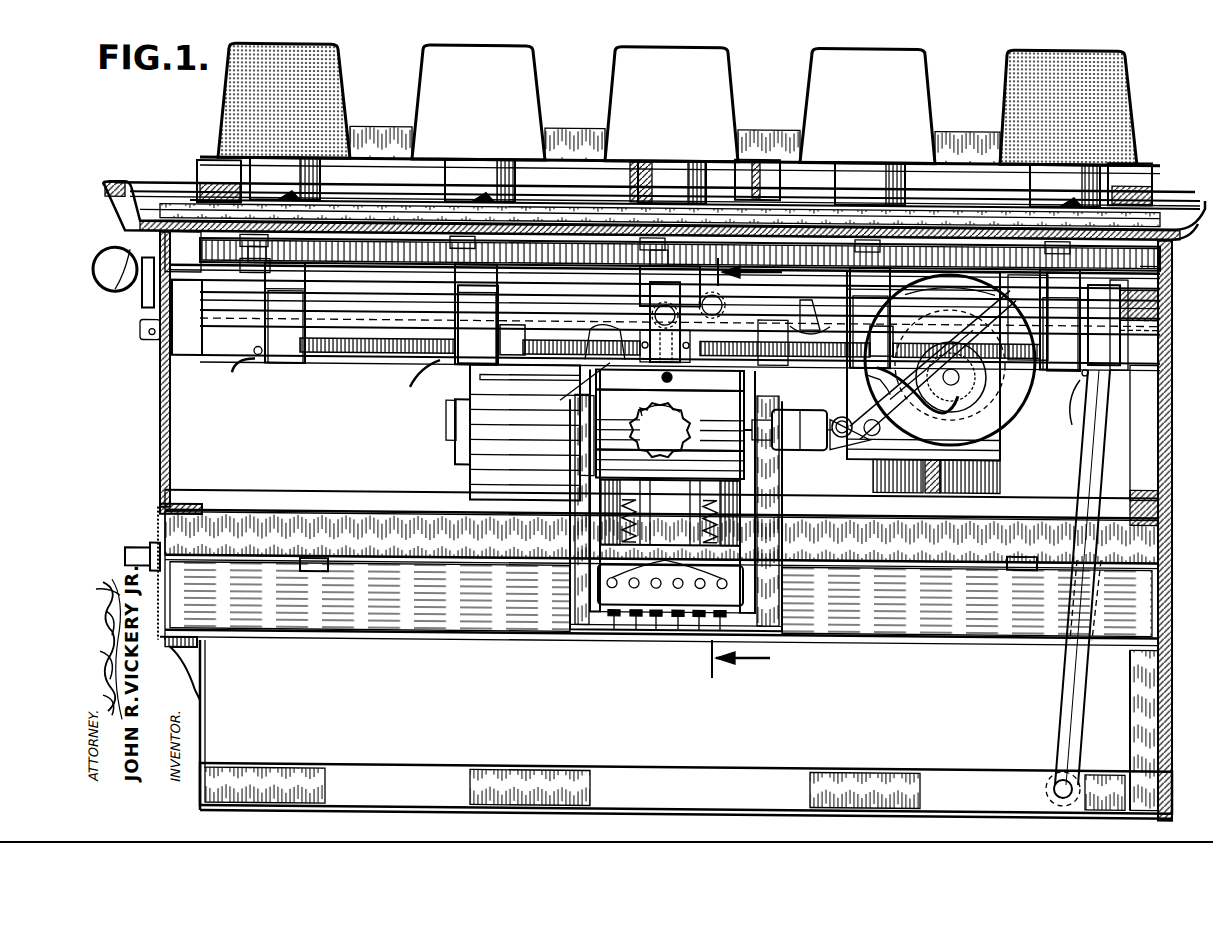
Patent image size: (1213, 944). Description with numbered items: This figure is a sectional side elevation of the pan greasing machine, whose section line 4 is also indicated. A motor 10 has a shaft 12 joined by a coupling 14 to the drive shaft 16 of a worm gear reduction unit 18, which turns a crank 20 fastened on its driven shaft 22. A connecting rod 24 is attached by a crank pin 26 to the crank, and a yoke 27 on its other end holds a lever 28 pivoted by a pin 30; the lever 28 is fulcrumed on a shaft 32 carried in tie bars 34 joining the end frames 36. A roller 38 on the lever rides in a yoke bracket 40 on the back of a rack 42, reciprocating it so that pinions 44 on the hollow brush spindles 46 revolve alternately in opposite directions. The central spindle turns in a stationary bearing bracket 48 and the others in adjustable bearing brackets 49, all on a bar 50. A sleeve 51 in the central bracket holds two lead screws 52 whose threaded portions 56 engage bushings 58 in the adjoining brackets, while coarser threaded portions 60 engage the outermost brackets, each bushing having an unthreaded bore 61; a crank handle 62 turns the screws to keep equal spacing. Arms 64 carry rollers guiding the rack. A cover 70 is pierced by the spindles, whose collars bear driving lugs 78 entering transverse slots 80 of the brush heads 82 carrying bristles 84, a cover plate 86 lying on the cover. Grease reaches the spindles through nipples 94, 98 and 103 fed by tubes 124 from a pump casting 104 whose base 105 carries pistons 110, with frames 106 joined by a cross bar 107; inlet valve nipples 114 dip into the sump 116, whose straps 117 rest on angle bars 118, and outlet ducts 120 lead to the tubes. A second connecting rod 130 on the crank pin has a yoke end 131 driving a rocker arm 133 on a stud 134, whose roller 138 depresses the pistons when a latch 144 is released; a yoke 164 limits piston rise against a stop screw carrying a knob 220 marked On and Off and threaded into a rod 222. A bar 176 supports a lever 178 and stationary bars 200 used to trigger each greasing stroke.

The section line 4- 4 is at (736, 468).
The motor 10 is at (520, 436).
The shaft 12 is at (766, 418).
The coupling 14 is at (796, 418).
The drive shaft 16 is at (840, 440).
The worm gear reduction unit 18 is at (992, 424).
The crank 20 is at (958, 378).
The driven shaft 22 is at (958, 365).
The connecting rod 24 is at (1028, 362).
The crank pin 26 is at (975, 325).
The yoke 27 is at (1118, 392).
The lever 28 is at (1085, 458).
The pin 30 is at (1086, 577).
The shaft 32 is at (1054, 778).
The tie bars 34 is at (898, 778).
The end frames 36 is at (208, 451).
The roller 38 is at (1123, 325).
The yoke bracket 40 is at (1170, 282).
The rack 42 is at (392, 262).
The pinions 44 is at (298, 262).
The brush spindles 46 is at (248, 239).
The bearing bracket 48 is at (622, 282).
The adjustable bearing brackets 49 is at (294, 362).
The bar 50 is at (330, 270).
The sleeve 51 is at (652, 330).
The lead screws 52 is at (216, 356).
The threaded portions 56 is at (600, 362).
The bushings 58 is at (524, 320).
The threaded portions 60 is at (340, 352).
The unthreaded bore 61 is at (870, 286).
The crank handle 62 is at (142, 318).
The arm 64 is at (245, 260).
The cover 70 is at (135, 222).
The driving lugs 78 is at (292, 192).
The transverse slots 80 is at (285, 192).
The brush heads 82 is at (318, 171).
The bristles 84 is at (248, 108).
The cover plate 86 is at (186, 210).
The nipple 94 is at (260, 356).
The nipples 98 is at (452, 370).
The nipple 103 is at (662, 376).
The pump casting 104 is at (585, 573).
The base 105 is at (608, 635).
The frames 106 is at (600, 520).
The cross bar 107 is at (585, 388).
The pistons 110 is at (705, 540).
The nipples 114 is at (685, 648).
The sump 116 is at (582, 632).
The straps 117 is at (318, 570).
The angle bars 118 is at (408, 550).
The outlet ducts 120 is at (670, 577).
The tubes 124 is at (238, 376).
The connecting rod 130 is at (950, 392).
The yoke end 131 is at (855, 435).
The rocker arm 133 is at (838, 350).
The stud 134 is at (725, 305).
The roller 138 is at (665, 322).
The latch 144 is at (738, 368).
The yoke 164 is at (715, 470).
The bar 176 is at (394, 190).
The lever 178 is at (766, 175).
The stationary bars 200 is at (200, 166).
The knob 220 is at (650, 418).
The rod 222 is at (715, 432).